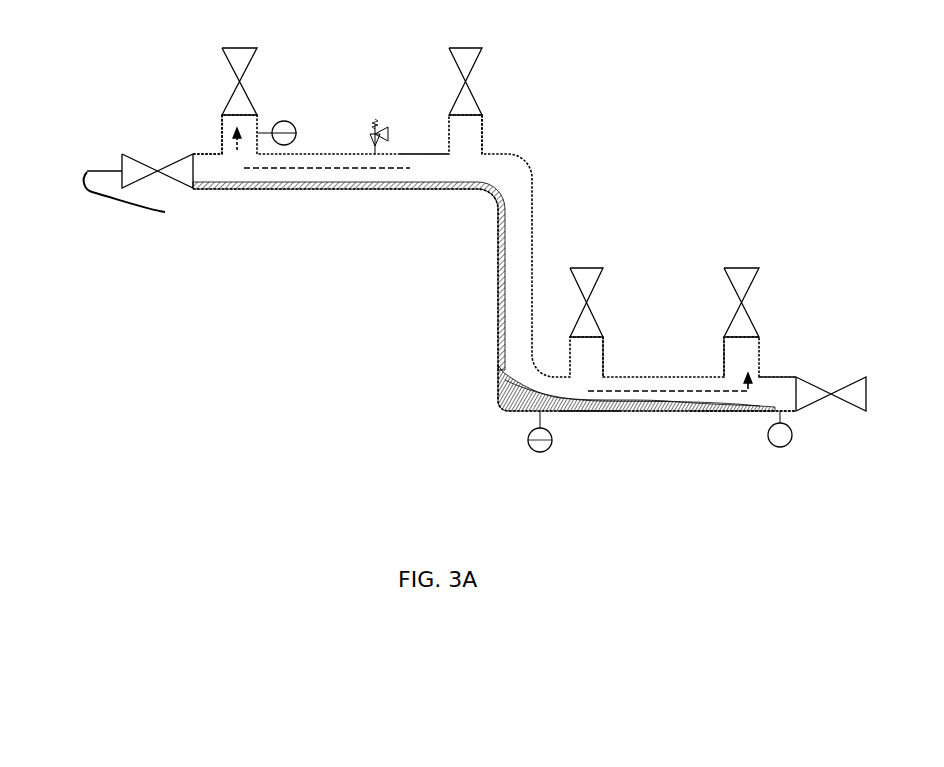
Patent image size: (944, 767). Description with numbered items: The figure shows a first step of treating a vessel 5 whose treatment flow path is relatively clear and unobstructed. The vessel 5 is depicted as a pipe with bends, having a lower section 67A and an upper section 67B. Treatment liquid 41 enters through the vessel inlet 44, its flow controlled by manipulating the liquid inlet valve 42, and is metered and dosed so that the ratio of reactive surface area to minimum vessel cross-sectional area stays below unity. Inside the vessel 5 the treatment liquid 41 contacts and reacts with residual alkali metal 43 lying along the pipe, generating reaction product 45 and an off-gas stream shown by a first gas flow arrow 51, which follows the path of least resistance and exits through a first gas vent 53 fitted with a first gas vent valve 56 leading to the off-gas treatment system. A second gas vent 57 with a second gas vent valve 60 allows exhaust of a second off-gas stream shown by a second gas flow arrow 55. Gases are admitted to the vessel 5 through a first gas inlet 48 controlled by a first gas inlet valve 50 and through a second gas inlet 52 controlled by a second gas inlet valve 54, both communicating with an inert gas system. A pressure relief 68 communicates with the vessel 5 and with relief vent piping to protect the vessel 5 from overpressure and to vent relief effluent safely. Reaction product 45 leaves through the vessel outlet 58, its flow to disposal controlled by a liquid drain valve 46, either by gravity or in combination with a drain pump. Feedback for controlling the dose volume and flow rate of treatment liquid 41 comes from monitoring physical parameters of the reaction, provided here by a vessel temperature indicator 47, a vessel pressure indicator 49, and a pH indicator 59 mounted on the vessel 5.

The vessel 5 is at (532, 182).
The treatment liquid 41 is at (193, 190).
The liquid inlet valve 42 is at (122, 155).
The residual alkali metal 43 is at (510, 397).
The vessel inlet 44 is at (200, 154).
The reaction product 45 is at (713, 412).
The liquid drain valve 46 is at (867, 393).
The vessel temperature indicator 47 is at (552, 440).
The first gas inlet 48 is at (483, 133).
The vessel pressure indicator 49 is at (285, 121).
The first gas inlet valve 50 is at (452, 48).
The first gas flow arrow 51 is at (340, 168).
The second gas inlet 52 is at (605, 352).
The first gas vent 53 is at (222, 117).
The second gas inlet valve 54 is at (570, 268).
The second gas flow arrow 55 is at (620, 391).
The first gas vent valve 56 is at (226, 48).
The second gas vent 57 is at (723, 357).
The vessel outlet 58 is at (775, 376).
The pH indicator 59 is at (792, 436).
The second gas vent valve 60 is at (755, 268).
The lower section 67A is at (577, 412).
The upper section 67B is at (410, 152).
The pressure relief 68 is at (370, 150).